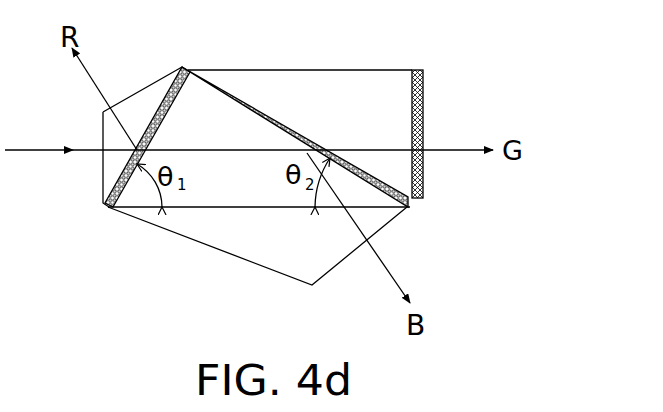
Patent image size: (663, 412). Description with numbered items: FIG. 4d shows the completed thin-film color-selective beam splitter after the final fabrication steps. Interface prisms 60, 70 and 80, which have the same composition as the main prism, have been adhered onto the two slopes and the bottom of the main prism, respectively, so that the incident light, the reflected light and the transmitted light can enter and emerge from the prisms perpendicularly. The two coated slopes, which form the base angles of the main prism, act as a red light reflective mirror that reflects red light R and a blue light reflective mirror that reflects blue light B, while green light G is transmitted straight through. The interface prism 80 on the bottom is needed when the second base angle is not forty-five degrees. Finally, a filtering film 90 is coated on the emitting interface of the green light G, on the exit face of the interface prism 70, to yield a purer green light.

The interface prism 60 is at (134, 112).
The interface prism 70 is at (367, 90).
The filtering film 90 is at (421, 125).
The interface prism 80 is at (250, 238).